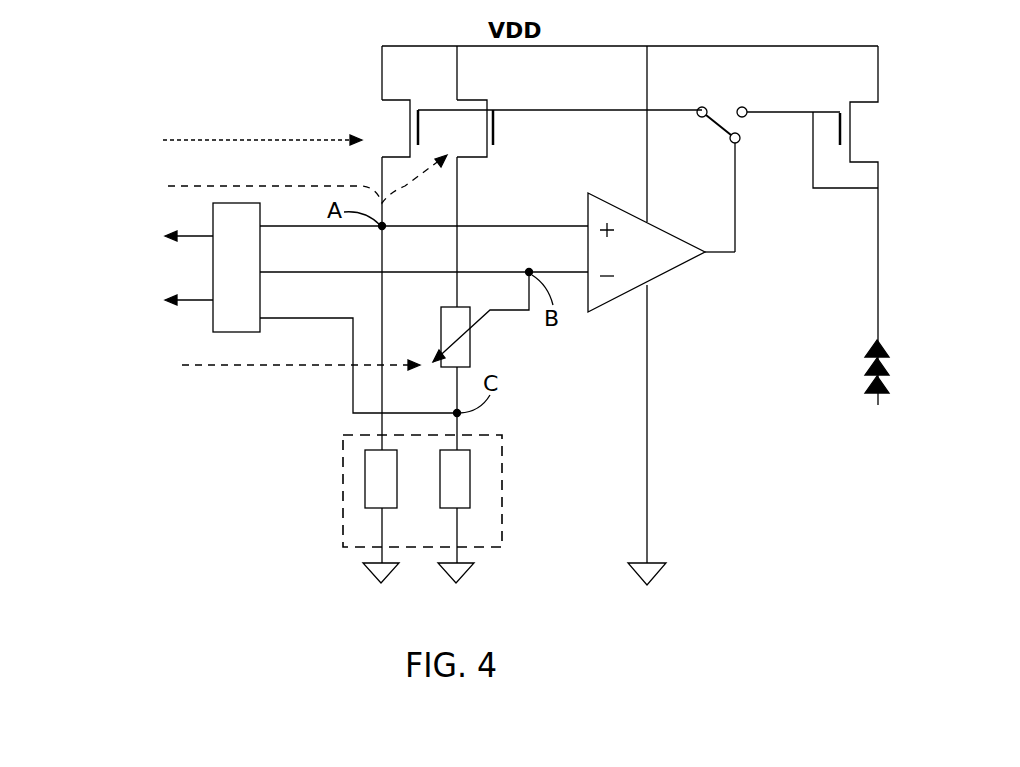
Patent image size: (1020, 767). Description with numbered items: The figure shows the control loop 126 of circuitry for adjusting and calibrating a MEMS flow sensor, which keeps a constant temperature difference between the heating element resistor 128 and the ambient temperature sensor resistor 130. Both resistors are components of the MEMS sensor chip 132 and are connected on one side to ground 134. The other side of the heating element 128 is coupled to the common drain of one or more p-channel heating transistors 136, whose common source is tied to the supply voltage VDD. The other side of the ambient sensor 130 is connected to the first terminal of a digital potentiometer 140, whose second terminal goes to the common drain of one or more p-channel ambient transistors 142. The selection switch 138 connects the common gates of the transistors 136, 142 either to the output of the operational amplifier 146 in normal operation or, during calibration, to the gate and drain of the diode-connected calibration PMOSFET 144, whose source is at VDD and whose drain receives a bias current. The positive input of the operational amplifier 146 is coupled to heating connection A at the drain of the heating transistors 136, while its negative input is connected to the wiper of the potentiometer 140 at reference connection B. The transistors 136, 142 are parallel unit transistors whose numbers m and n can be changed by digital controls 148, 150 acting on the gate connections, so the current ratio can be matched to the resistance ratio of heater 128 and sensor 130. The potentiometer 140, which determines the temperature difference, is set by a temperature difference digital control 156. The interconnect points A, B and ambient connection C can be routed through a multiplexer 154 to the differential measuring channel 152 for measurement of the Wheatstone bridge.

The control loop 126 is at (262, 50).
The heating element resistor 128 is at (377, 478).
The ambient temperature sensor resistor 130 is at (450, 485).
The chip 132 is at (500, 498).
The ground 134 is at (455, 577).
The p-channel heating transistors 136 is at (407, 122).
The selection switch 138 is at (719, 98).
The digital potentiometer 140 is at (470, 338).
The p-channel ambient transistors 142 is at (462, 100).
The calibration PMOSFET 144 is at (847, 130).
The operational amplifier 146 is at (647, 245).
The digital control 148 is at (177, 127).
The digital control 150 is at (177, 170).
The differential measuring channel 152 is at (77, 302).
The multiplexer 154 is at (223, 227).
The temperature difference digital control 156 is at (177, 382).